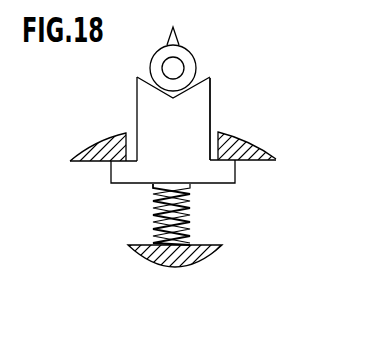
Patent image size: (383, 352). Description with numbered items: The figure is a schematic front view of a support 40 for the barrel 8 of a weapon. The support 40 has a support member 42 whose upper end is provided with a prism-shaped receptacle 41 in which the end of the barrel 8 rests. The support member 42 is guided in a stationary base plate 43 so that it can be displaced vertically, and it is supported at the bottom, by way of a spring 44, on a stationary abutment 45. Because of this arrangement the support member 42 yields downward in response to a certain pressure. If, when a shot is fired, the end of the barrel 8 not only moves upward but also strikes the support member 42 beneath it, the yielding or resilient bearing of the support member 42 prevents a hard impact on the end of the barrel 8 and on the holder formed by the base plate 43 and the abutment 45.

The barrel 8 is at (190, 59).
The support 40 is at (228, 103).
The prism-shaped receptacle 41 is at (160, 90).
The support member 42 is at (200, 127).
The stationary base plate 43 is at (93, 163).
The spring 44 is at (190, 221).
The stationary abutment 45 is at (215, 258).